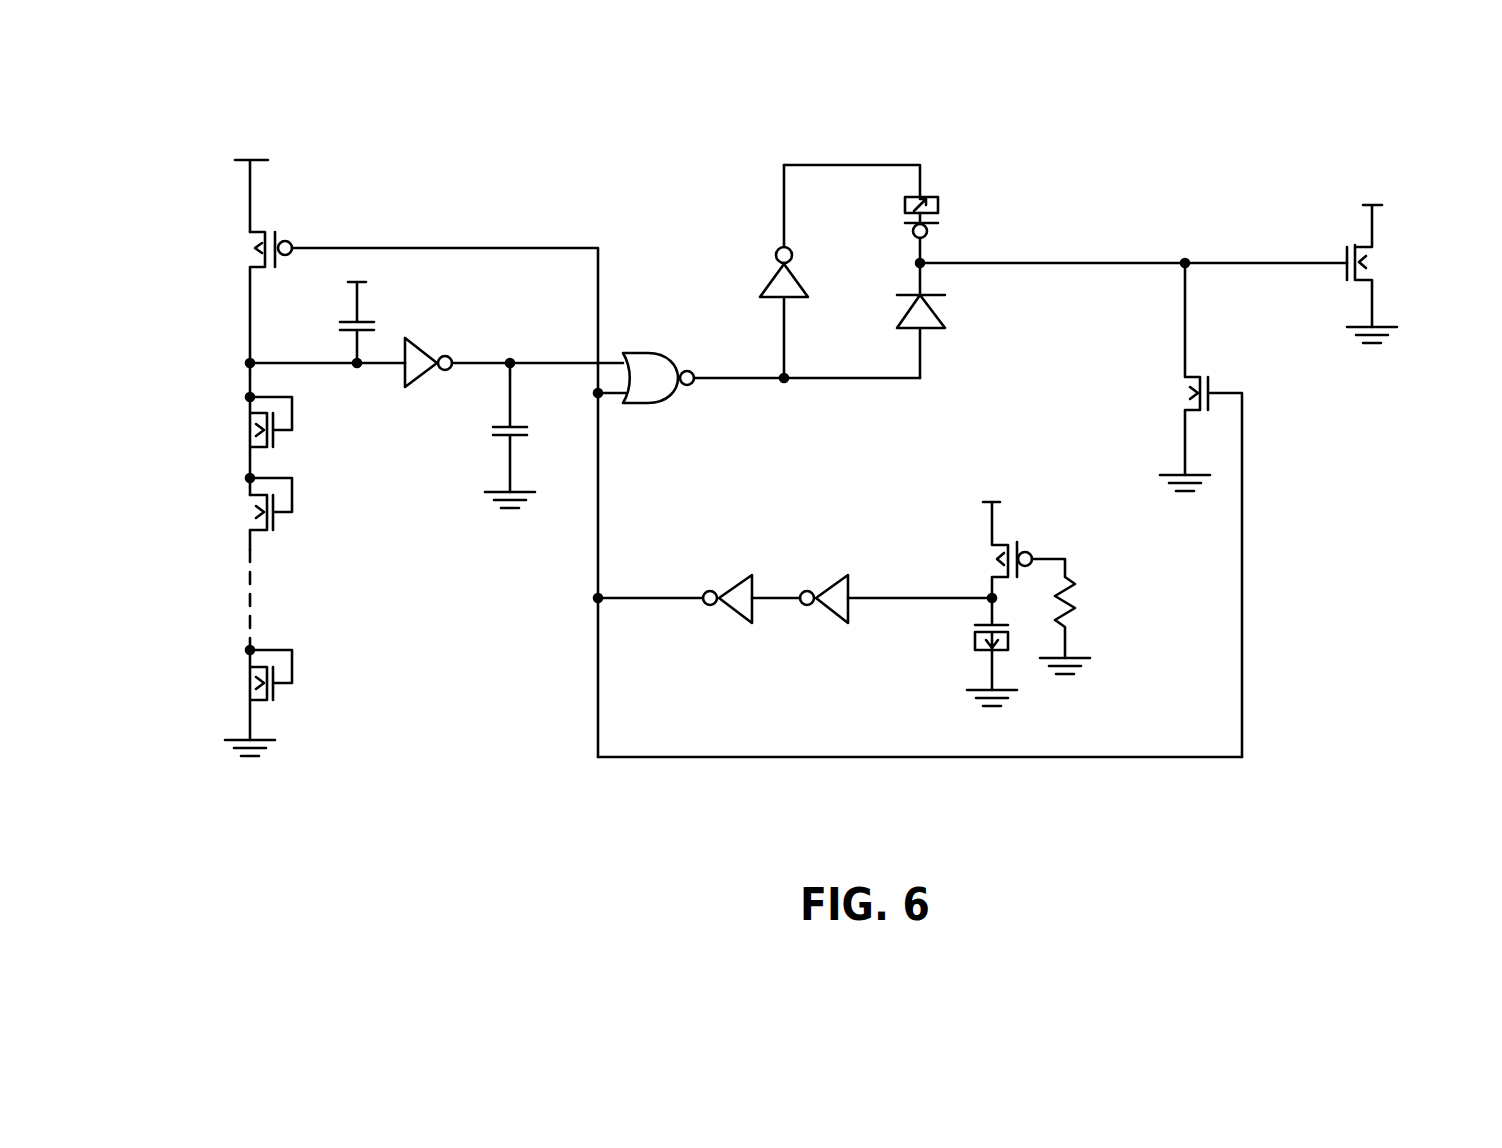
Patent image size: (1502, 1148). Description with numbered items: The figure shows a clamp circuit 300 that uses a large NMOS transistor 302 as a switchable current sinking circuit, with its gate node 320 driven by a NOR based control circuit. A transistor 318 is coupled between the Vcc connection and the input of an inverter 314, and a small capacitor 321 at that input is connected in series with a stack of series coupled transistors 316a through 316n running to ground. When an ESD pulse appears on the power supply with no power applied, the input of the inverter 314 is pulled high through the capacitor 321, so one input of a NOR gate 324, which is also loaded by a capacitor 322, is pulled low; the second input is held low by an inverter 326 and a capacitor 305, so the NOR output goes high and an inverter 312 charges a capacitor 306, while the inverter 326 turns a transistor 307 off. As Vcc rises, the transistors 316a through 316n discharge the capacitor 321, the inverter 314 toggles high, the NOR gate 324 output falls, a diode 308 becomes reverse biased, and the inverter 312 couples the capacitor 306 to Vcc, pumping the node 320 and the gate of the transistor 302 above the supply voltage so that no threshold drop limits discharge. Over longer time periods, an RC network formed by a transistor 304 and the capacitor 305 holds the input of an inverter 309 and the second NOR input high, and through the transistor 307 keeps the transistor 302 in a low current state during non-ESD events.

The clamp circuit 300 is at (1370, 500).
The NMOS transistor 302 is at (1377, 252).
The transistor 304 is at (985, 557).
The capacitor 305 is at (973, 642).
The capacitor 306 is at (946, 208).
The transistor 307 is at (1178, 388).
The diode 308 is at (946, 320).
The inverter 309 is at (836, 615).
The inverter 312 is at (770, 281).
The inverter 314 is at (418, 339).
The series coupled transistor 316a is at (244, 420).
The series coupled transistor 316n is at (244, 680).
The transistor 318 is at (244, 258).
The node 320 is at (1270, 259).
The capacitor 321 is at (345, 322).
The capacitor 322 is at (496, 426).
The NOR gate 324 is at (634, 351).
The inverter 326 is at (739, 615).